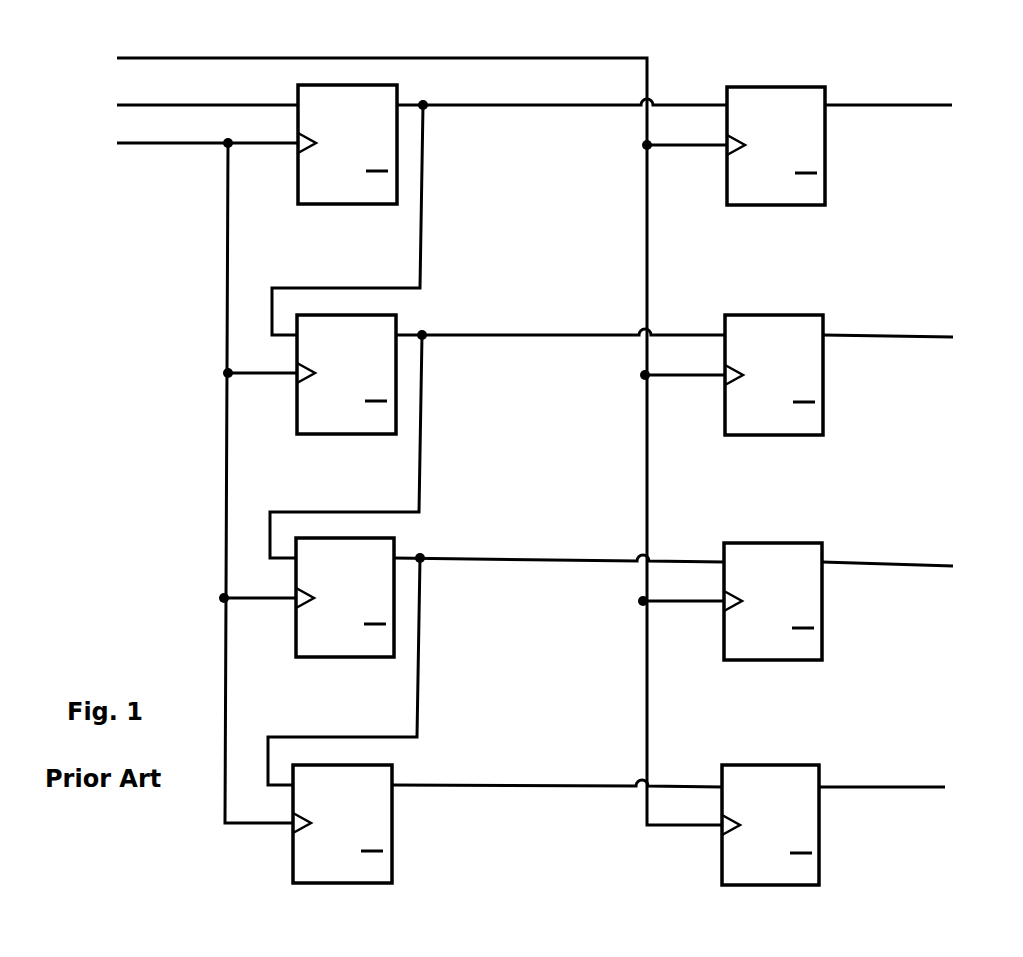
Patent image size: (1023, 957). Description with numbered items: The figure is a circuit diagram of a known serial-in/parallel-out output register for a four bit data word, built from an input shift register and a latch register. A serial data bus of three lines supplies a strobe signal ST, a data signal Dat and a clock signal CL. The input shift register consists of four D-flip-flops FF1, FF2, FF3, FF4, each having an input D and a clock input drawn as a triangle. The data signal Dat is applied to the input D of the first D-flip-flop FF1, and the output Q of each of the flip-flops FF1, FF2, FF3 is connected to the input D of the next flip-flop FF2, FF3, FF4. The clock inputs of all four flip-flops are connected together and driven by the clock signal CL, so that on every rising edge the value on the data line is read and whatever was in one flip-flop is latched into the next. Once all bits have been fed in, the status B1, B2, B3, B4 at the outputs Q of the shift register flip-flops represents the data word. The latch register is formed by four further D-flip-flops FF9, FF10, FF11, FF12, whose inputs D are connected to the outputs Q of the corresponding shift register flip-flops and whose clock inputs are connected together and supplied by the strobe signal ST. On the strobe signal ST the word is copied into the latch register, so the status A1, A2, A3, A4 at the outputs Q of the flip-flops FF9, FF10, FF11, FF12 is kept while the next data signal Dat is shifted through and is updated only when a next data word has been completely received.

The strobe signal ST is at (397, 436).
The data signal Dat is at (180, 105).
The clock pulse signal CL is at (182, 478).
The first D-flip-flop FF1 is at (325, 144).
The second D-flip-flop FF2 is at (324, 374).
The third D-flip-flop FF3 is at (322, 597).
The fourth D-flip-flop FF4 is at (320, 824).
The D-flip-flop of latch register FF9 is at (754, 146).
The D-flip-flop of latch register FF10 is at (749, 375).
The D-flip-flop of latch register FF11 is at (747, 601).
The D-flip-flop of latch register FF12 is at (745, 825).
The status at output Q of first shift register flip-flop B1 is at (499, 217).
The status at output Q of second shift register flip-flop B2 is at (497, 443).
The status at output Q of third shift register flip-flop B3 is at (496, 669).
The status at output Q of fourth shift register flip-flop B4 is at (557, 806).
The status of output Q of latch register flip-flop A1 is at (918, 103).
The status of output Q of latch register flip-flop A2 is at (918, 335).
The status of output Q of latch register flip-flop A3 is at (917, 571).
The status of output Q of latch register flip-flop A4 is at (913, 785).